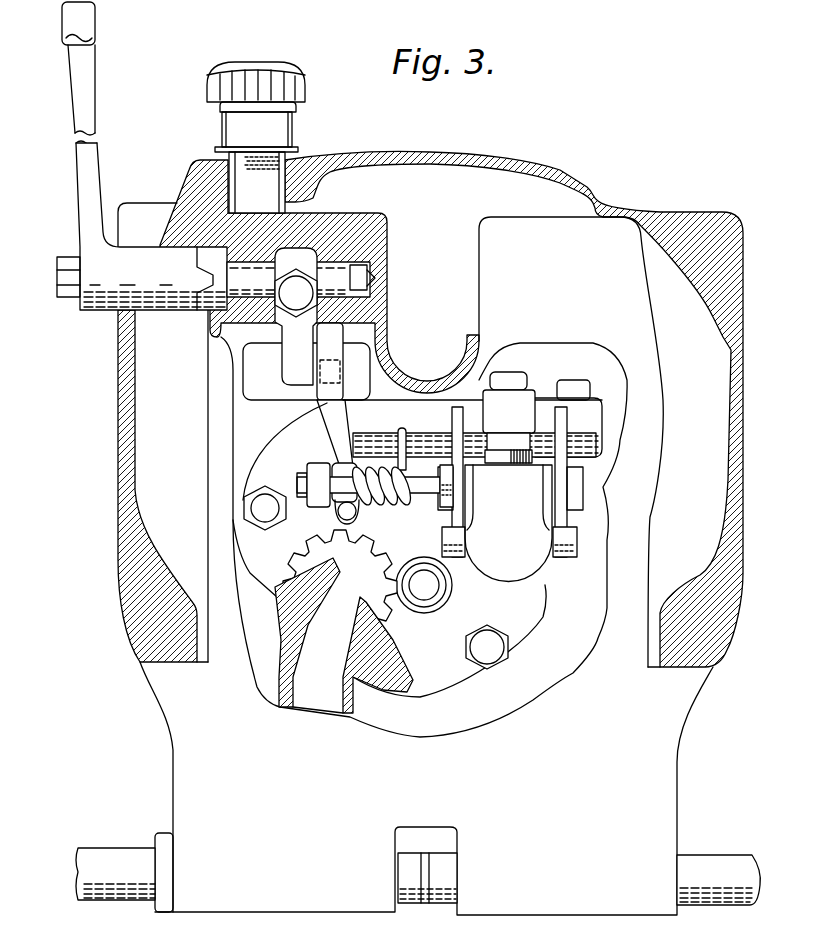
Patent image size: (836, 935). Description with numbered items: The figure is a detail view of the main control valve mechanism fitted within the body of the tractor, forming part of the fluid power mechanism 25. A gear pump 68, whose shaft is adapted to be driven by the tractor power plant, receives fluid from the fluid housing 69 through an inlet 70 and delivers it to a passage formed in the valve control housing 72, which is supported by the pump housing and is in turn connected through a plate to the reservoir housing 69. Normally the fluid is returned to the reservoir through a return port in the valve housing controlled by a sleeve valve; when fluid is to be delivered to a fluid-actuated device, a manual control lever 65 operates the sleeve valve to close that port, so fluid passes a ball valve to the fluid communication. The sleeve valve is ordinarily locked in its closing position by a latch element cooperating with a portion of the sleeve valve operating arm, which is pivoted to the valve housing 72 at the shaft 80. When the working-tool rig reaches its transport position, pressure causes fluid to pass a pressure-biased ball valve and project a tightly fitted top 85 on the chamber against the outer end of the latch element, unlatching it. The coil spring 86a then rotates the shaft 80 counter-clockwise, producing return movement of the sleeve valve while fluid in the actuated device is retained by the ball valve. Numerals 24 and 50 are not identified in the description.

The left housing wall 24 is at (133, 577).
The fluid power mechanism 25 is at (670, 738).
The shaft 50 is at (150, 867).
The manual control lever 65 is at (88, 178).
The gear pump 68 is at (447, 678).
The fluid housing 69 is at (187, 737).
The inlet 70 is at (303, 637).
The valve control housing 72 is at (508, 560).
The shaft 80 is at (433, 487).
The top 85 is at (532, 398).
The coil spring 86a is at (373, 470).